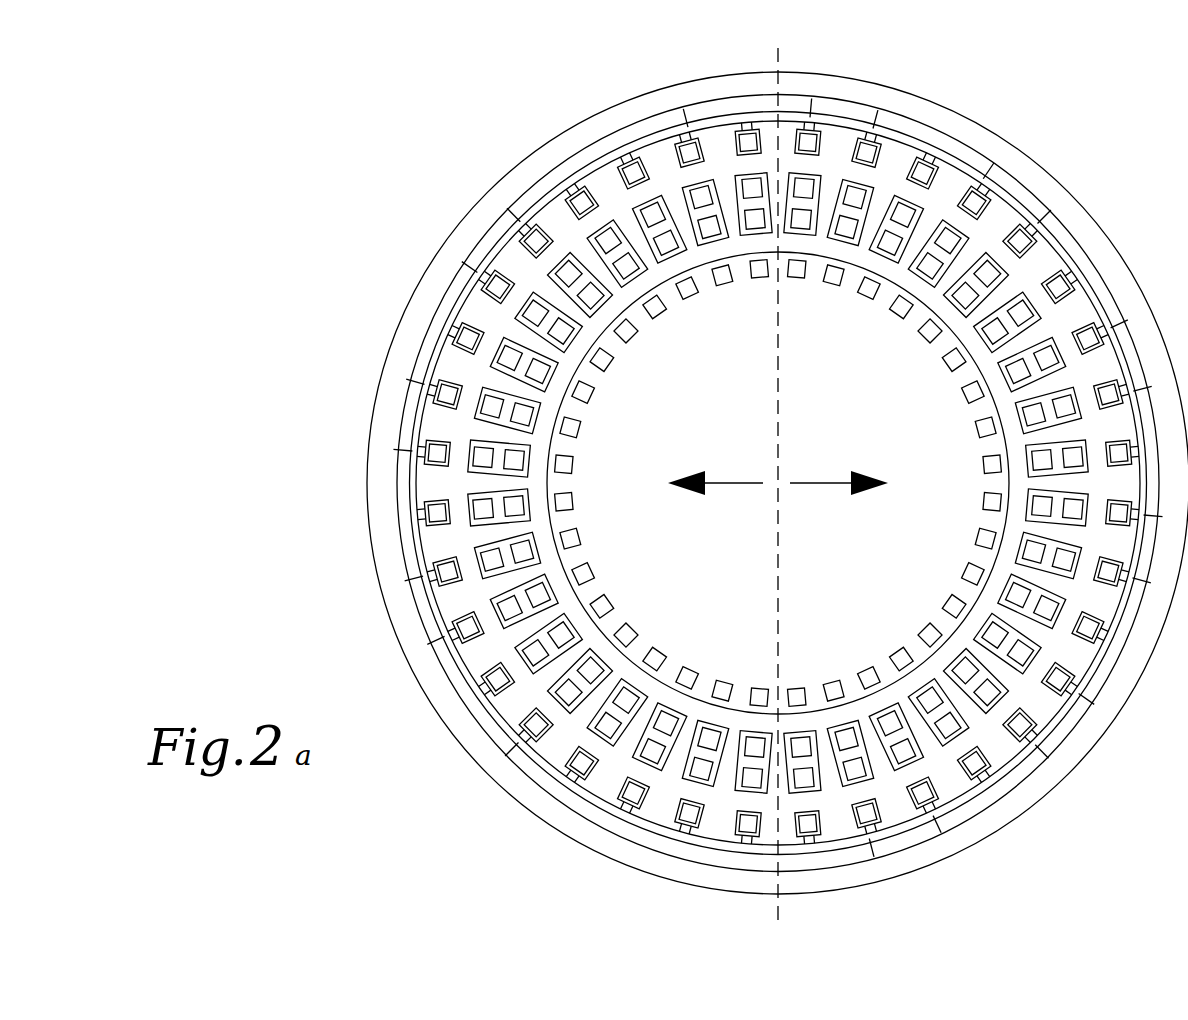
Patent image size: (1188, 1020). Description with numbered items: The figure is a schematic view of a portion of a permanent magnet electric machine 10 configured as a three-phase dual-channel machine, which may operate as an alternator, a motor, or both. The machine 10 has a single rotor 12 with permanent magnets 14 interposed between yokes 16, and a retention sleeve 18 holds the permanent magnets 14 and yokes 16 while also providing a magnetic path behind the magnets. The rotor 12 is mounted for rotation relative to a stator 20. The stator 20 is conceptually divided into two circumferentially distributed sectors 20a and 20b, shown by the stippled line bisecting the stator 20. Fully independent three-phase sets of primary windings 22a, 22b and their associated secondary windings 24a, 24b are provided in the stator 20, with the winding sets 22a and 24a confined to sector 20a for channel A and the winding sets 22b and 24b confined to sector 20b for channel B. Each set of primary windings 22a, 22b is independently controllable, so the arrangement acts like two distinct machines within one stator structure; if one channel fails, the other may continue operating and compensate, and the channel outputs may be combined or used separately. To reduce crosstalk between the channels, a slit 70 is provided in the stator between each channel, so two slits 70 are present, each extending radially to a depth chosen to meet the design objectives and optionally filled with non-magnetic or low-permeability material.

The permanent magnet electric machine 10 is at (432, 112).
The rotor 12 is at (372, 345).
The permanent magnets 14 is at (457, 682).
The yokes 16 is at (410, 420).
The retention sleeve 18 is at (427, 287).
The stator 20 is at (517, 267).
The first stator sector 20a is at (672, 597).
The second stator sector 20b is at (903, 597).
The primary windings of channel A 22a is at (610, 237).
The primary windings of channel B 22b is at (857, 197).
The secondary windings of channel A 24a is at (630, 263).
The secondary windings of channel B 24b is at (930, 633).
The slit 70 is at (810, 241).